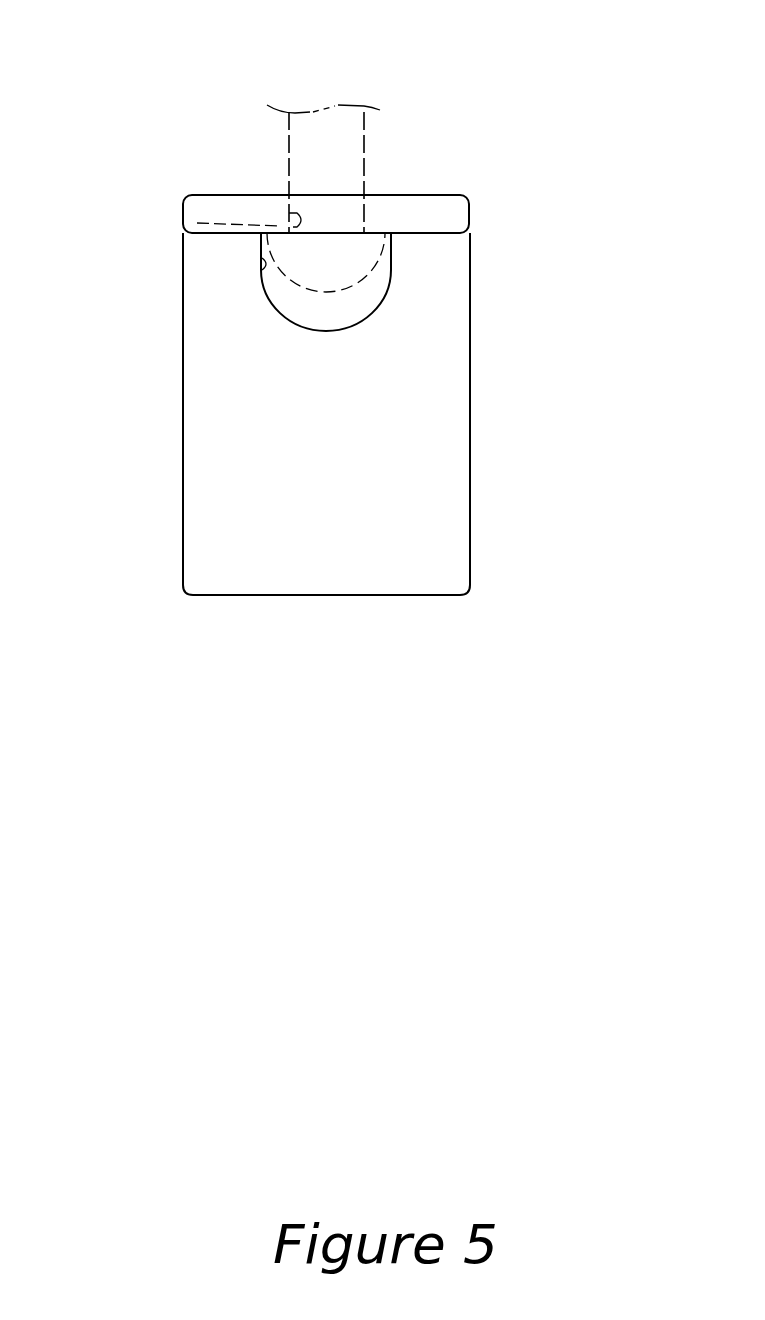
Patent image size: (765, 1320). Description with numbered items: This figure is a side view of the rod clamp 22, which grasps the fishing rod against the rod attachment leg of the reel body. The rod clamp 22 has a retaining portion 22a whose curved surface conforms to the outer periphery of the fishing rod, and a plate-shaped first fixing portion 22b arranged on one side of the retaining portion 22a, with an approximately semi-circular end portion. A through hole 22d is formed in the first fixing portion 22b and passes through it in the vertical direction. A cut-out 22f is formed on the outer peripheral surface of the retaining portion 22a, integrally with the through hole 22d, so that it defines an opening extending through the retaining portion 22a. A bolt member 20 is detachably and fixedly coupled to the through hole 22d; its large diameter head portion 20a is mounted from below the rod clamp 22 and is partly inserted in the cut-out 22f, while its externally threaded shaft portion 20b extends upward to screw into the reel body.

The bolt member 20 is at (392, 183).
The head portion 20a is at (380, 257).
The shaft portion 20b is at (365, 145).
The rod clamp 22 is at (490, 608).
The retaining portion 22a is at (447, 423).
The first fixing portion 22b is at (207, 203).
The through hole 22d is at (197, 223).
The cut-out 22f is at (262, 272).